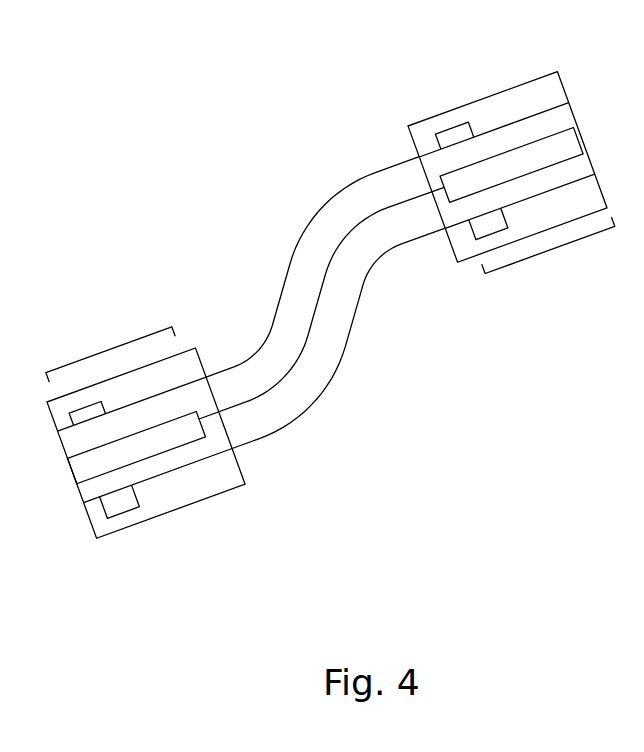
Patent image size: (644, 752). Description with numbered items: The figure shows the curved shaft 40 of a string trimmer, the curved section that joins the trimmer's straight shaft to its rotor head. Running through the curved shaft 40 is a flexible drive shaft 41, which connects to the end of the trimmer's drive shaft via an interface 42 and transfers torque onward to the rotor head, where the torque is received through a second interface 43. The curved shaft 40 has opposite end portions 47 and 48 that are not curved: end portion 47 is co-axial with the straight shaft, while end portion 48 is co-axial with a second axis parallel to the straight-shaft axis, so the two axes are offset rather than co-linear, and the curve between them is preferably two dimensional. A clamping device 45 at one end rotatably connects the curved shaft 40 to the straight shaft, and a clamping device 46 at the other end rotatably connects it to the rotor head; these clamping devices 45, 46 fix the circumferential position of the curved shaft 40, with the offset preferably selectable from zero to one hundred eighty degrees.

The curved shaft 40 is at (233, 170).
The flexible drive shaft 41 is at (310, 313).
The interface 42 is at (511, 152).
The interface 43 is at (141, 436).
The clamping device 45 is at (454, 135).
The clamping device 46 is at (120, 501).
The end portion 47 is at (548, 245).
The end portion 48 is at (110, 354).